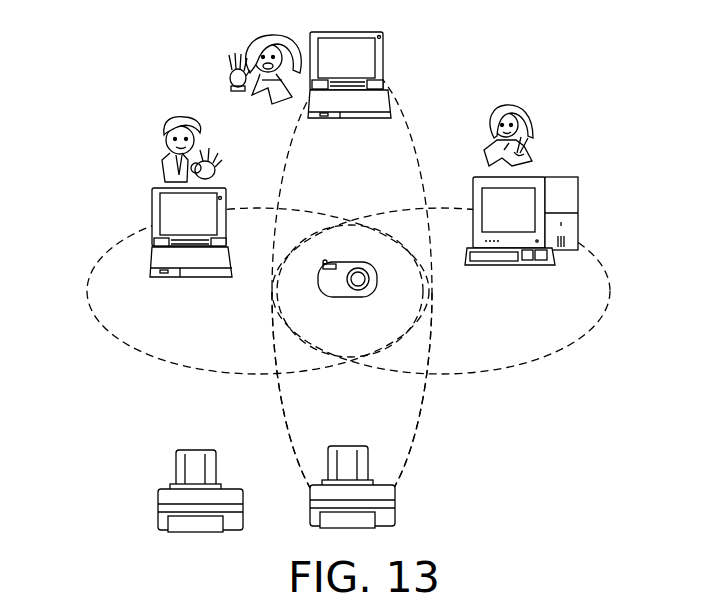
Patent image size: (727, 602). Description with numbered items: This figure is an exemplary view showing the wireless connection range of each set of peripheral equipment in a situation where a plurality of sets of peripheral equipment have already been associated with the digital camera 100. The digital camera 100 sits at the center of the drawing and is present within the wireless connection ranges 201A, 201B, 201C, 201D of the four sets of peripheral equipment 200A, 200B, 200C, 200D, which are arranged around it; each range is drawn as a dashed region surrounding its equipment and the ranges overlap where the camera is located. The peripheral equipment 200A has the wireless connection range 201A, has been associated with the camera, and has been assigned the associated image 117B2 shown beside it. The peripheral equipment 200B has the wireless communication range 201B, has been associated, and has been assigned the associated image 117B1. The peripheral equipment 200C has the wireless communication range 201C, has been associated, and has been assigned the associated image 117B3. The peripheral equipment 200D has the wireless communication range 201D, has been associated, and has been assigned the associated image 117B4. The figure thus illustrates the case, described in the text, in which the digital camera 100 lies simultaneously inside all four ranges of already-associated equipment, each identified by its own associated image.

The digital camera 100 is at (340, 298).
The peripheral equipment 200A is at (389, 40).
The peripheral equipment 200B is at (578, 192).
The peripheral equipment 200C is at (396, 492).
The peripheral equipment 200D is at (152, 200).
The wireless connection range 201A is at (405, 131).
The wireless communication range 201B is at (578, 242).
The wireless communication range 201C is at (422, 434).
The wireless communication range 201D is at (88, 278).
The associated image 117B1 is at (525, 107).
The associated image 117B2 is at (232, 79).
The associated image 117B3 is at (158, 497).
The associated image 117B4 is at (166, 164).